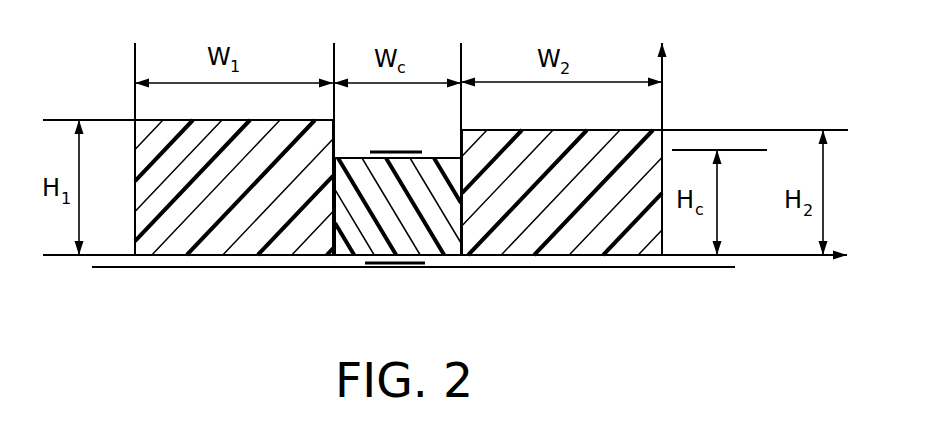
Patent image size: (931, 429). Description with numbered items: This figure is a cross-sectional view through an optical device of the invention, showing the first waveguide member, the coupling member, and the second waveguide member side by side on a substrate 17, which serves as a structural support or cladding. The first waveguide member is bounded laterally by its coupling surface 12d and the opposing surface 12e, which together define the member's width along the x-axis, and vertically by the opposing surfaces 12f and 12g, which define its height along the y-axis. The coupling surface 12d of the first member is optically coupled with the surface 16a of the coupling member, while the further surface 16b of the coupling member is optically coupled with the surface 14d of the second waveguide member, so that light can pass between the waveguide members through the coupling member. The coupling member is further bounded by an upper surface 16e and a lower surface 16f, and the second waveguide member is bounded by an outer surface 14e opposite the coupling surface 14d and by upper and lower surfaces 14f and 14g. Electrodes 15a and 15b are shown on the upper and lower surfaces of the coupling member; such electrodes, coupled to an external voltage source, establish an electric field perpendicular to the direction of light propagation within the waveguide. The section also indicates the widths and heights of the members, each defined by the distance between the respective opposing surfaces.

The opposing surface 12f is at (245, 122).
The opposing surface 12e is at (135, 226).
The opposing surface 12g is at (208, 255).
The coupling surface 12d is at (333, 205).
The top surface of center portion 16e is at (424, 158).
The coupling surface 16a is at (335, 188).
The bottom surface of center portion 16f is at (422, 255).
The coupling surface 16b is at (461, 212).
The upper electrode layer 15a is at (378, 150).
The lower electrode layer 15b is at (401, 266).
The top surface of second wall 14f is at (568, 131).
The coupling surface 14d is at (462, 196).
The bottom surface of second wall 14g is at (587, 255).
The outer side surface of second wall 14e is at (662, 198).
The substrate 17 is at (105, 268).